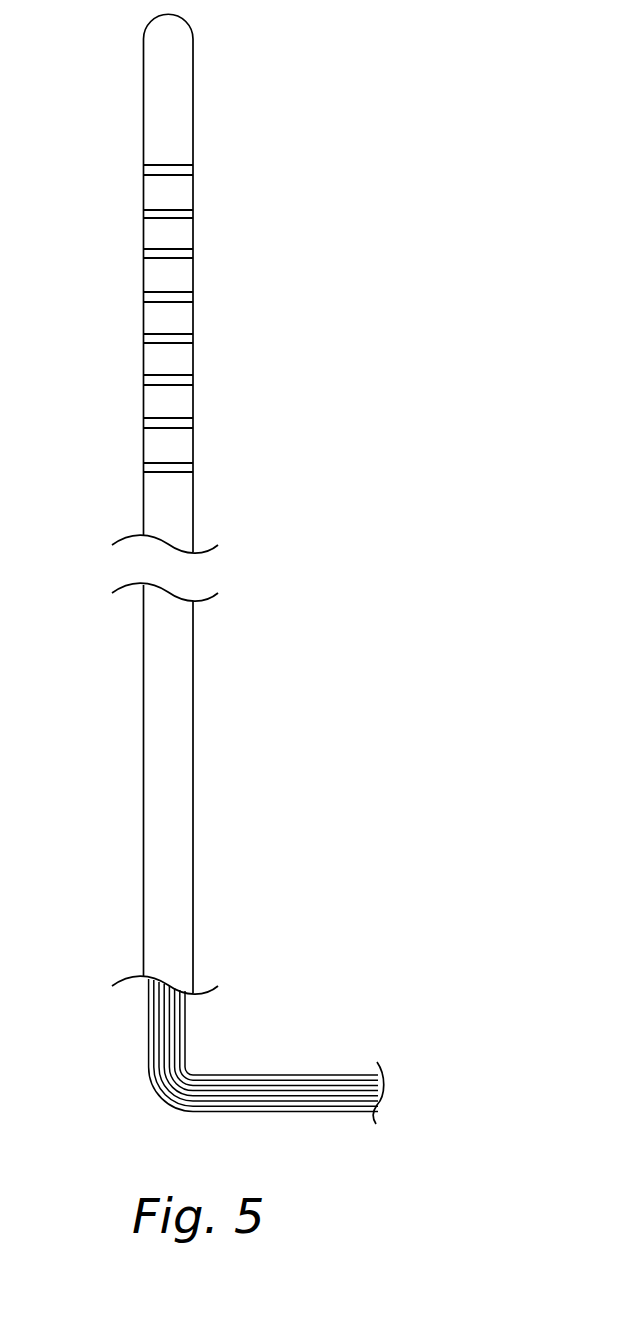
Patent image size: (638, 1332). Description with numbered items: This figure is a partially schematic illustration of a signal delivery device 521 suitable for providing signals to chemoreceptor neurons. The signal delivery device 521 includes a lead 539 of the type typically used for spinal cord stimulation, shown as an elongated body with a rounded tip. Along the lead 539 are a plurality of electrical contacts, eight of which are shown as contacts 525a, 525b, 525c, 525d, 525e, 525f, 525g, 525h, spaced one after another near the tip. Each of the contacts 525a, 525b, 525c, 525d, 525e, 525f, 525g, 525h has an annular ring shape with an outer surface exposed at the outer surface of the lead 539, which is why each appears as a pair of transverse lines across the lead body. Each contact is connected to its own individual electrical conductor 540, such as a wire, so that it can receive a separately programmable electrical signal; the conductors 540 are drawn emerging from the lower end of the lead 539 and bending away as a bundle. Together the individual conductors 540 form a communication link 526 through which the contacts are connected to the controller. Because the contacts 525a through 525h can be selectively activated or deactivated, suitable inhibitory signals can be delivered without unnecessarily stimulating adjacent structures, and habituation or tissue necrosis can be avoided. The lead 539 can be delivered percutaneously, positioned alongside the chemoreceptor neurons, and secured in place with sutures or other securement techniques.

The signal delivery device 521 is at (238, 281).
The electrical contact 525a is at (183, 90).
The electrical contact 525b is at (144, 213).
The electrical contact 525c is at (144, 253).
The electrical contact 525d is at (144, 296).
The electrical contact 525e is at (144, 338).
The electrical contact 525f is at (144, 379).
The electrical contact 525g is at (144, 422).
The electrical contact 525h is at (144, 465).
The lead 539 is at (188, 796).
The electrical conductor 540 is at (187, 1020).
The communication link 526 is at (401, 1069).